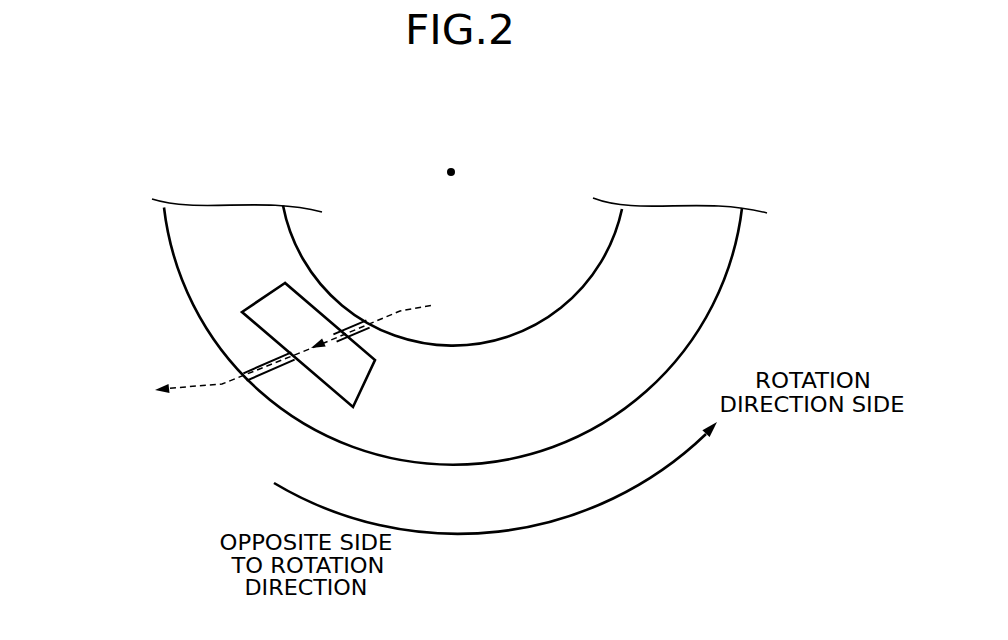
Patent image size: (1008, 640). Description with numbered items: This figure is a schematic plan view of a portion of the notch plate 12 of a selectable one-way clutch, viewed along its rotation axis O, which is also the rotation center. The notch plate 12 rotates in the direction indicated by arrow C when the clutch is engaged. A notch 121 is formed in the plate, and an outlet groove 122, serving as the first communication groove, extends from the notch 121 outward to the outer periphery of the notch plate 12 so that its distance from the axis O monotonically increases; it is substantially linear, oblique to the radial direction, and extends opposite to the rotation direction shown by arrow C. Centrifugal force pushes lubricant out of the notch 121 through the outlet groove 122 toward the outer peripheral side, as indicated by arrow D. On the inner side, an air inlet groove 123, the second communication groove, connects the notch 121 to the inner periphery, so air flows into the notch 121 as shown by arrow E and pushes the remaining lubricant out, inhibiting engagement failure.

The notch plate 12 is at (662, 325).
The notch 121 is at (310, 382).
The outlet groove 122 is at (262, 352).
The air inlet groove 123 is at (338, 318).
The axis O is at (451, 166).
The arrow indicating air inflow E is at (403, 307).
The arrow indicating lubricant discharge D is at (220, 384).
The arrow indicating rotation direction C is at (620, 493).